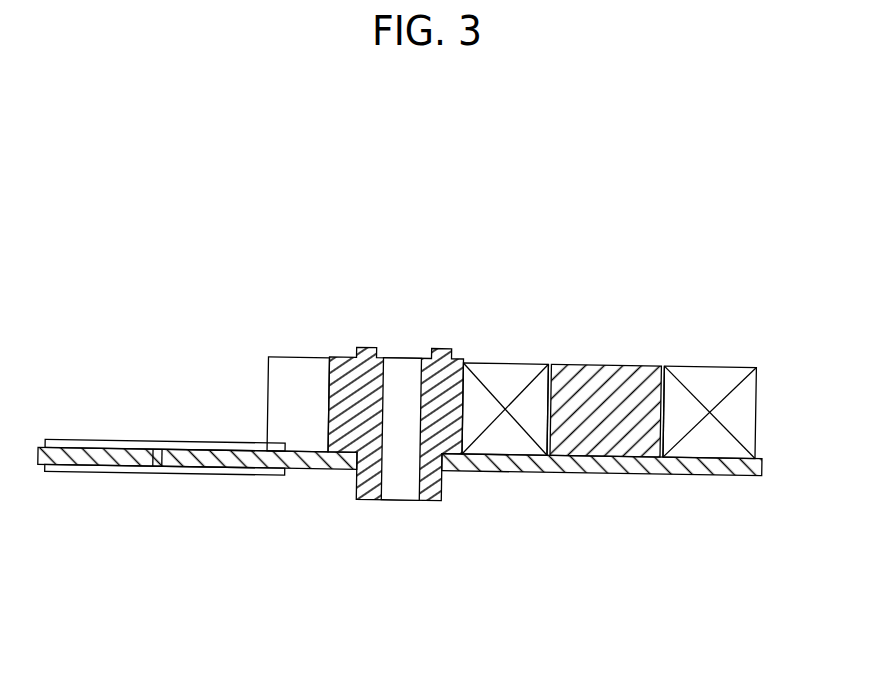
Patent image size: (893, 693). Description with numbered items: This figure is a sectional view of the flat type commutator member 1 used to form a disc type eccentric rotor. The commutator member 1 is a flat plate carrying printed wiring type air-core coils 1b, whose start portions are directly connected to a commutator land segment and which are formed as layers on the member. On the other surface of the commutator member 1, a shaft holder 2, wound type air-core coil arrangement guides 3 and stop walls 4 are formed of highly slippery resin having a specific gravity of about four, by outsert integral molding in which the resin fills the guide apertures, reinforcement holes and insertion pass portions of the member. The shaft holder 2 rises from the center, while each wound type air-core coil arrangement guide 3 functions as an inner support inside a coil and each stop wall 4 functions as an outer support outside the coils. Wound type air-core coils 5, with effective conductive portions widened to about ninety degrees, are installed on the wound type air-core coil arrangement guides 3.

The commutator member 1 is at (688, 473).
The air-core coil 1b is at (145, 449).
The shaft holder 2 is at (417, 387).
The wound type air-core coil arrangement guide 3 is at (597, 389).
The stop wall 4 is at (299, 372).
The wound type air-core coil 5 is at (720, 372).